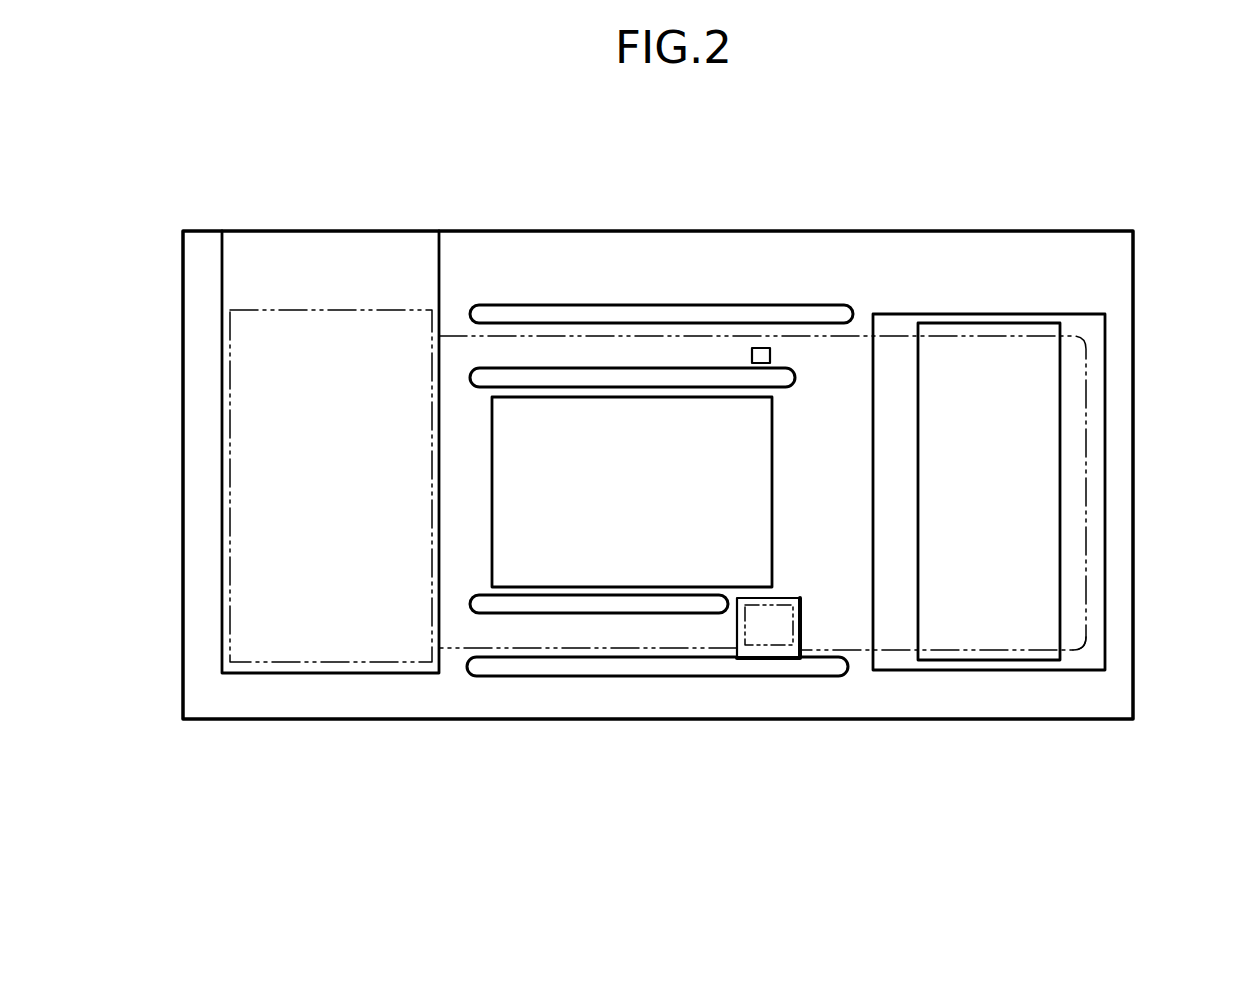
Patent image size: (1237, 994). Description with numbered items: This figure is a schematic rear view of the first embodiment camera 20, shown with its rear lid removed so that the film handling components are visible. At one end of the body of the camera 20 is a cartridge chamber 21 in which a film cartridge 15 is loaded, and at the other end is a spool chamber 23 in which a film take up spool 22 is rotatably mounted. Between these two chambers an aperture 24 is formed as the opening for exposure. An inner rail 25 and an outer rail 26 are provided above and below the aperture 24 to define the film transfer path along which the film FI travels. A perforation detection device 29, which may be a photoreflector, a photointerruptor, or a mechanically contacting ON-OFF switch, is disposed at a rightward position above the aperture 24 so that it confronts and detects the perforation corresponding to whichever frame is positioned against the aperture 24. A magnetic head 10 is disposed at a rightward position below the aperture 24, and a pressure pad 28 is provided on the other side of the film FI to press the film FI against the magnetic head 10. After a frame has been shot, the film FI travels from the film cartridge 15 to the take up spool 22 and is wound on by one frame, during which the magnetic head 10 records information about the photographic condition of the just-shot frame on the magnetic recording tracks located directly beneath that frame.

The camera 20 is at (1075, 226).
The cartridge chamber 21 is at (286, 258).
The film cartridge 15 is at (287, 663).
The outer rail 26 is at (672, 312).
The inner rail 25 is at (588, 382).
The aperture 24 is at (772, 457).
The perforation detection device 29 is at (760, 350).
The pressure pad 28 is at (793, 598).
The magnetic head 10 is at (750, 620).
The film take up spool 22 is at (1040, 530).
The spool chamber 23 is at (1077, 655).
The film FI is at (855, 652).